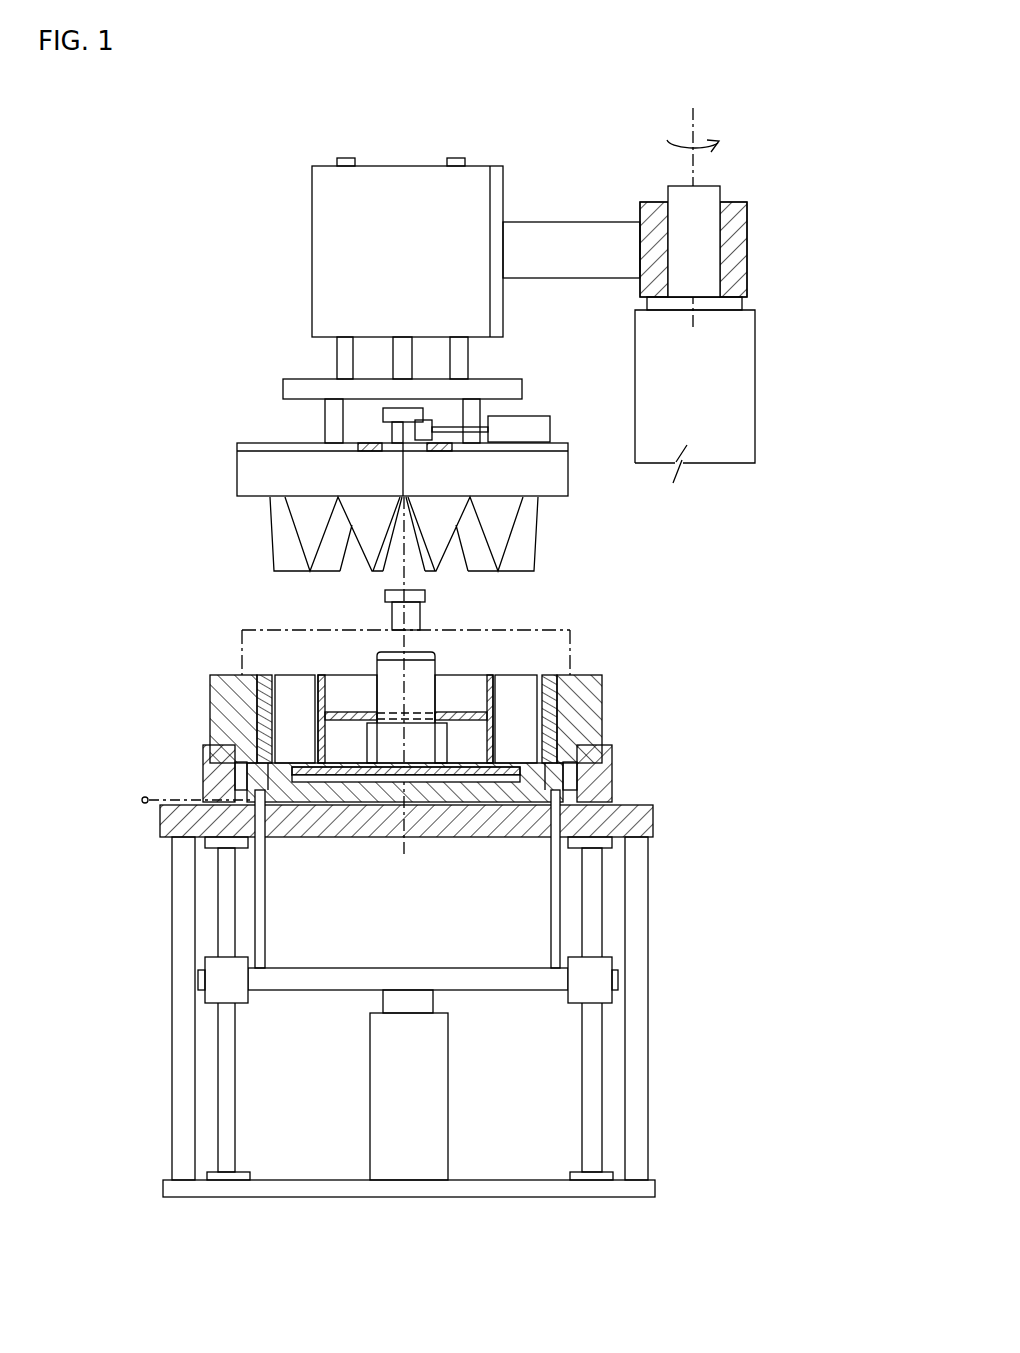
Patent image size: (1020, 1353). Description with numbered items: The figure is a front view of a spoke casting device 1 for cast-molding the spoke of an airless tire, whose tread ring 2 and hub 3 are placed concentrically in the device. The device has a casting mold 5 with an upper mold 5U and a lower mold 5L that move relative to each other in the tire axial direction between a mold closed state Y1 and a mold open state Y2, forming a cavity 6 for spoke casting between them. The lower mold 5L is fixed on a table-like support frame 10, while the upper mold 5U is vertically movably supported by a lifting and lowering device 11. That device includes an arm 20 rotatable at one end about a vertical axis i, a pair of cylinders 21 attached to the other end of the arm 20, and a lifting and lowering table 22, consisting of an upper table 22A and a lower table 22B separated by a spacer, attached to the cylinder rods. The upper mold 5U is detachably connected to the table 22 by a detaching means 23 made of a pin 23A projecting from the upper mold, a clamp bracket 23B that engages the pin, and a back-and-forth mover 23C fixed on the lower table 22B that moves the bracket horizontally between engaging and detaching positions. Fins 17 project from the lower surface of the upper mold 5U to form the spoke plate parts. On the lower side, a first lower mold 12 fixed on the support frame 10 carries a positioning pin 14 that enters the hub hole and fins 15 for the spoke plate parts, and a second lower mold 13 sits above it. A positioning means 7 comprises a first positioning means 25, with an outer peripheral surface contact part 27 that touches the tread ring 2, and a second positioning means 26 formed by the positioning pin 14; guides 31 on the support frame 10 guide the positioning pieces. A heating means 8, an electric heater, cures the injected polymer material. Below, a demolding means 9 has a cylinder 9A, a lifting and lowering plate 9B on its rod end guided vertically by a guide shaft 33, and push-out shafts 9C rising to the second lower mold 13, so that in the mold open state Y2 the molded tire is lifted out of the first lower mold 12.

The spoke casting device 1 is at (122, 446).
The tread ring 2 is at (548, 673).
The hub 3 is at (465, 712).
The casting mold 5 is at (446, 678).
The upper mold 5U is at (557, 470).
The lower mold 5L is at (423, 728).
The cavity 6 is at (294, 690).
The positioning means 7 is at (136, 795).
The heating means 8 is at (438, 807).
The demolding means 9 is at (486, 1026).
The cylinder 9A is at (450, 1117).
The lifting and lowering plate 9B is at (507, 972).
The push-out shafts 9C is at (560, 893).
The support frame 10 is at (392, 838).
The lifting and lowering device 11 is at (278, 216).
The first lower mold 12 is at (663, 838).
The second lower mold 13 is at (583, 766).
The positioning pin 14 is at (390, 748).
The fins 15 is at (520, 673).
The fins 17 is at (538, 523).
The arm 20 is at (553, 222).
The cylinders 21 is at (310, 187).
The lifting and lowering table 22 is at (167, 245).
The upper lifting and lowering table 22A is at (297, 377).
The lower lifting and lowering table 22B is at (257, 440).
The detaching means 23 is at (541, 398).
The pin 23A is at (395, 408).
The clamp bracket 23B is at (424, 420).
The back-and-forth mover 23C is at (553, 424).
The first positioning means 25 is at (215, 722).
The second positioning means 26 is at (254, 805).
The outer peripheral surface contact part 27 is at (272, 675).
The guides 31 is at (202, 772).
The guide shaft 33 is at (600, 1053).
The vertical axis i is at (693, 124).
The mold closed state Y1 is at (221, 579).
The mold open state Y2 is at (219, 456).